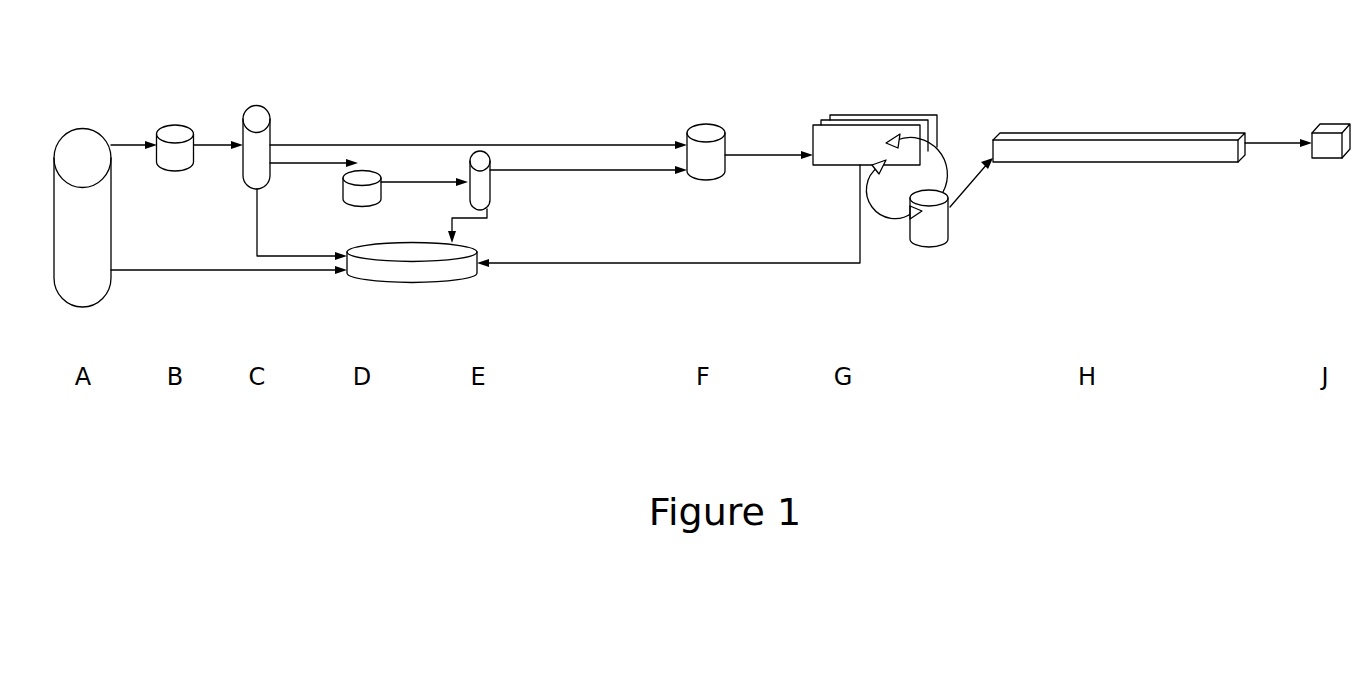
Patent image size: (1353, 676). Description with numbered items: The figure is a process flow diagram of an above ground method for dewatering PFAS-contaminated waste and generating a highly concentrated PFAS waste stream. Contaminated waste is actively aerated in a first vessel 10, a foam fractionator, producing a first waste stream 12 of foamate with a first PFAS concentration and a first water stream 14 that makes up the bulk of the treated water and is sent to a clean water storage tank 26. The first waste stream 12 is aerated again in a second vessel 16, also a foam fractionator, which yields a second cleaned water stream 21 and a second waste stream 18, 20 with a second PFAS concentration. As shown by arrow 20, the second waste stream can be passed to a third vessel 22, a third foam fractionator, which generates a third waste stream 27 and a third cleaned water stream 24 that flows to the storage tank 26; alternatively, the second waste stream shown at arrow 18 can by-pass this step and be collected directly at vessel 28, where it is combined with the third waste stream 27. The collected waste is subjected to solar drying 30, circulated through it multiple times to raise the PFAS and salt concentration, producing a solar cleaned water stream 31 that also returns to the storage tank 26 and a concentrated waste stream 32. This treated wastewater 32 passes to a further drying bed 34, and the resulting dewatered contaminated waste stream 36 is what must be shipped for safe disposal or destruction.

The first vessel 10 is at (88, 284).
The first waste stream 12 is at (175, 164).
The first water stream 14 is at (229, 272).
The second vessel 16 is at (250, 191).
The second waste stream 18 is at (477, 150).
The second waste stream 20 is at (313, 165).
The second cleaned water stream 21 is at (303, 271).
The third vessel 22 is at (427, 179).
The third cleaned water stream 24 is at (413, 254).
The clean water storage tank 26 is at (412, 283).
The third waste stream 27 is at (589, 171).
The vessel 28 is at (706, 181).
The solar drying 30 is at (838, 167).
The solar cleaned water stream 31 is at (669, 264).
The waste stream 32 is at (960, 199).
The drying bed 34 is at (1115, 163).
The contaminated waste stream 36 is at (1330, 159).